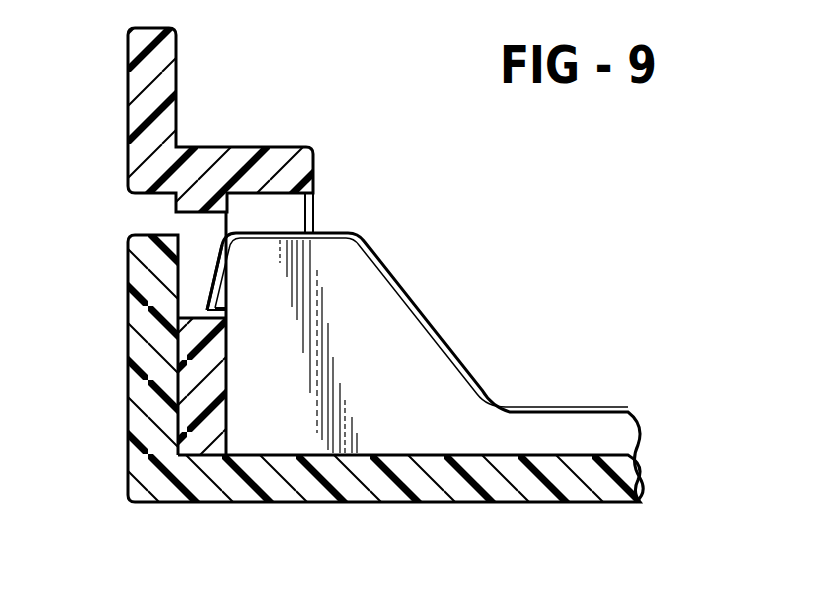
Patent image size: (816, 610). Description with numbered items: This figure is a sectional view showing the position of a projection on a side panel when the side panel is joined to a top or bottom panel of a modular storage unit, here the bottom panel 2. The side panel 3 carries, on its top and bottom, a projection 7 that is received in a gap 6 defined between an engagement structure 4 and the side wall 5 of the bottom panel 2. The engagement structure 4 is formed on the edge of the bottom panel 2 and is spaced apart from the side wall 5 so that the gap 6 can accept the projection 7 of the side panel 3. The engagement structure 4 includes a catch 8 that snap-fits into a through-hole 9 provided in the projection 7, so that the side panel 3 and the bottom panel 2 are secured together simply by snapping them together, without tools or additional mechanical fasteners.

The bottom panel 2 is at (425, 488).
The side panel 3 is at (137, 118).
The engagement structure 4 is at (420, 312).
The side wall 5 is at (135, 412).
The gap 6 is at (195, 258).
The projection 7 is at (217, 392).
The catch 8 is at (210, 308).
The through-hole 9 is at (197, 233).